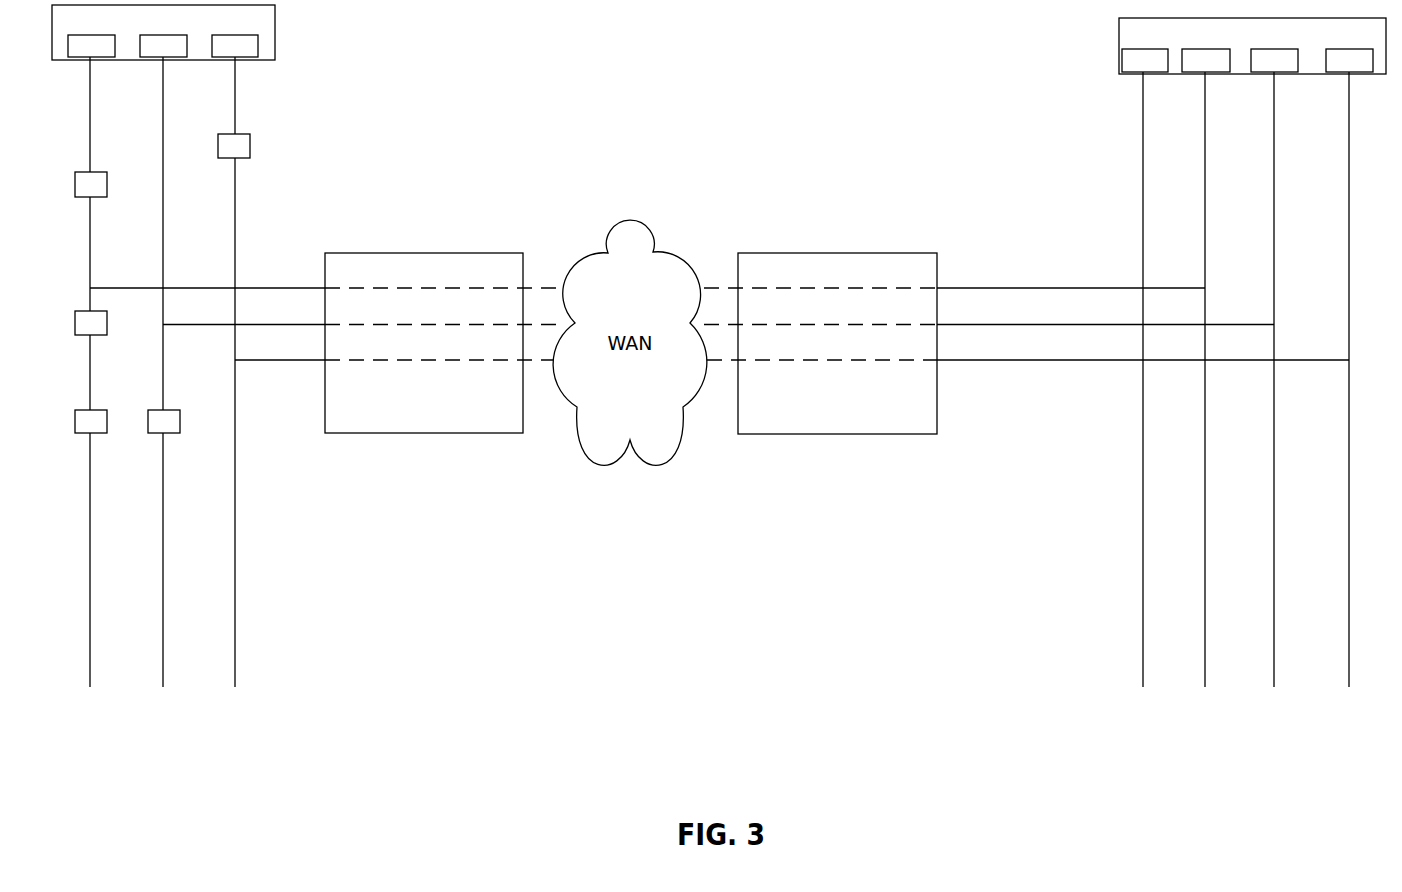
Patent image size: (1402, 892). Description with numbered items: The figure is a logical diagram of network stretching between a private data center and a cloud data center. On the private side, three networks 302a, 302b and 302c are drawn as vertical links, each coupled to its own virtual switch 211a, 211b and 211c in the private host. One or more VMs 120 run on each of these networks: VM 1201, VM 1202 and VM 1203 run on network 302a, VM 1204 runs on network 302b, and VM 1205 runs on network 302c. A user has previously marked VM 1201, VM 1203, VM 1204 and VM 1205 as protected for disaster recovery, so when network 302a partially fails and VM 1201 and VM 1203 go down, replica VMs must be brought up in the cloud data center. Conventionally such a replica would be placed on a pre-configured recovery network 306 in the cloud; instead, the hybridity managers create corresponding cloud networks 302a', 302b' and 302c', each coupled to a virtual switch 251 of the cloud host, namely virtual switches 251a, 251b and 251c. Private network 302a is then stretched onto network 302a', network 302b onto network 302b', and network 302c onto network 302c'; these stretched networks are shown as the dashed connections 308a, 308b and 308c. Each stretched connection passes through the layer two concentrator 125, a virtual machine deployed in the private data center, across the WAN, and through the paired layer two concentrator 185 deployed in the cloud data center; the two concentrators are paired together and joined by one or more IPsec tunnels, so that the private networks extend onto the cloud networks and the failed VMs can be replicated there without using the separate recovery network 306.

The virtual switch 211a is at (91, 46).
The virtual switch 211b is at (163, 46).
The virtual switch 211c is at (235, 46).
The virtual switch 251 is at (1145, 60).
The virtual switch 251a is at (1206, 60).
The virtual switch 251b is at (1274, 60).
The virtual switch 251c is at (1349, 60).
The network 302a is at (55, 372).
The network 302b is at (130, 372).
The network 302c is at (201, 372).
The network 302a' is at (1178, 379).
The network 302b' is at (1247, 379).
The network 302c' is at (1322, 379).
The pre-configured recovery network 306 is at (1143, 130).
The stretched network 308a is at (310, 288).
The stretched network 308b is at (310, 324).
The stretched network 308c is at (322, 360).
The virtual machine 120 is at (134, 315).
The virtual machine 1201 is at (76, 190).
The virtual machine 1202 is at (76, 320).
The virtual machine 1203 is at (76, 420).
The virtual machine 1204 is at (148, 426).
The virtual machine 1205 is at (218, 157).
The L2 concentrator 125 is at (445, 253).
The L2 concentrator 185 is at (847, 253).